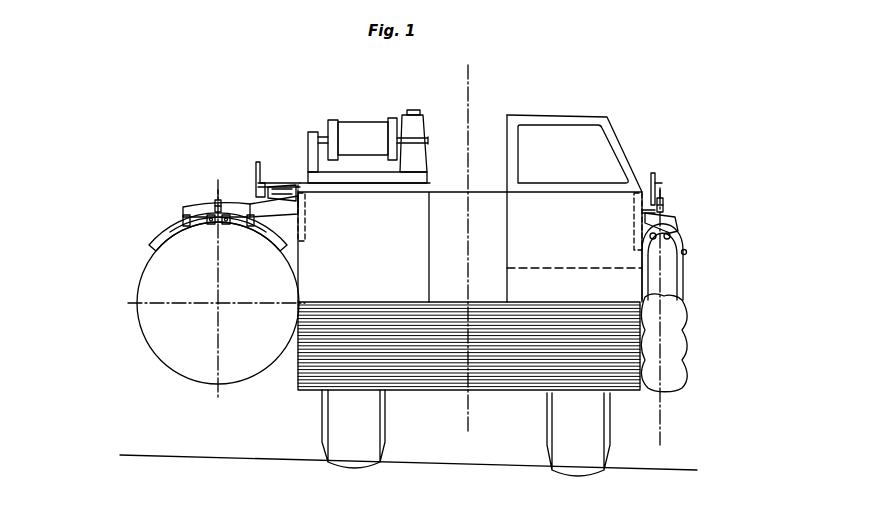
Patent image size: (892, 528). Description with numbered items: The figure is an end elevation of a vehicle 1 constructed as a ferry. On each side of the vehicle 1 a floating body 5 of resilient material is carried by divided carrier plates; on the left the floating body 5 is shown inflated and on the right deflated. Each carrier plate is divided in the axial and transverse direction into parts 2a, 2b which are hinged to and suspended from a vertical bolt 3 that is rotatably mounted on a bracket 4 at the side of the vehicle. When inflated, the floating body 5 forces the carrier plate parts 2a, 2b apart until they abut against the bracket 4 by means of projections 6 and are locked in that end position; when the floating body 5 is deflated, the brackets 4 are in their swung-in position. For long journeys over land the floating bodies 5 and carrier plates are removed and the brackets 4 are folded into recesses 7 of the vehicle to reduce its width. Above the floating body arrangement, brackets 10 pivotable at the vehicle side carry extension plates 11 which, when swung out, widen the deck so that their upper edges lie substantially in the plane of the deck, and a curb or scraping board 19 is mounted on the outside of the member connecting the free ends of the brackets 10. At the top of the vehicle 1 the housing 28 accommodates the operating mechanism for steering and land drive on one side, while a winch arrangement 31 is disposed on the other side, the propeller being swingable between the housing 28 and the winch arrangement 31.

The vehicle 1 is at (413, 205).
The carrier plate part 2a is at (675, 242).
The carrier plate part 2b is at (644, 250).
The vertical bolt 3 is at (215, 203).
The bracket 4 is at (680, 216).
The floating body 5 is at (672, 342).
The projection 6 is at (687, 253).
The recess 7 is at (303, 220).
The bracket 10 is at (283, 192).
The extension plate 11 is at (648, 186).
The curb or scraping board 19 is at (660, 183).
The housing 28 is at (560, 145).
The winch arrangement 31 is at (355, 138).